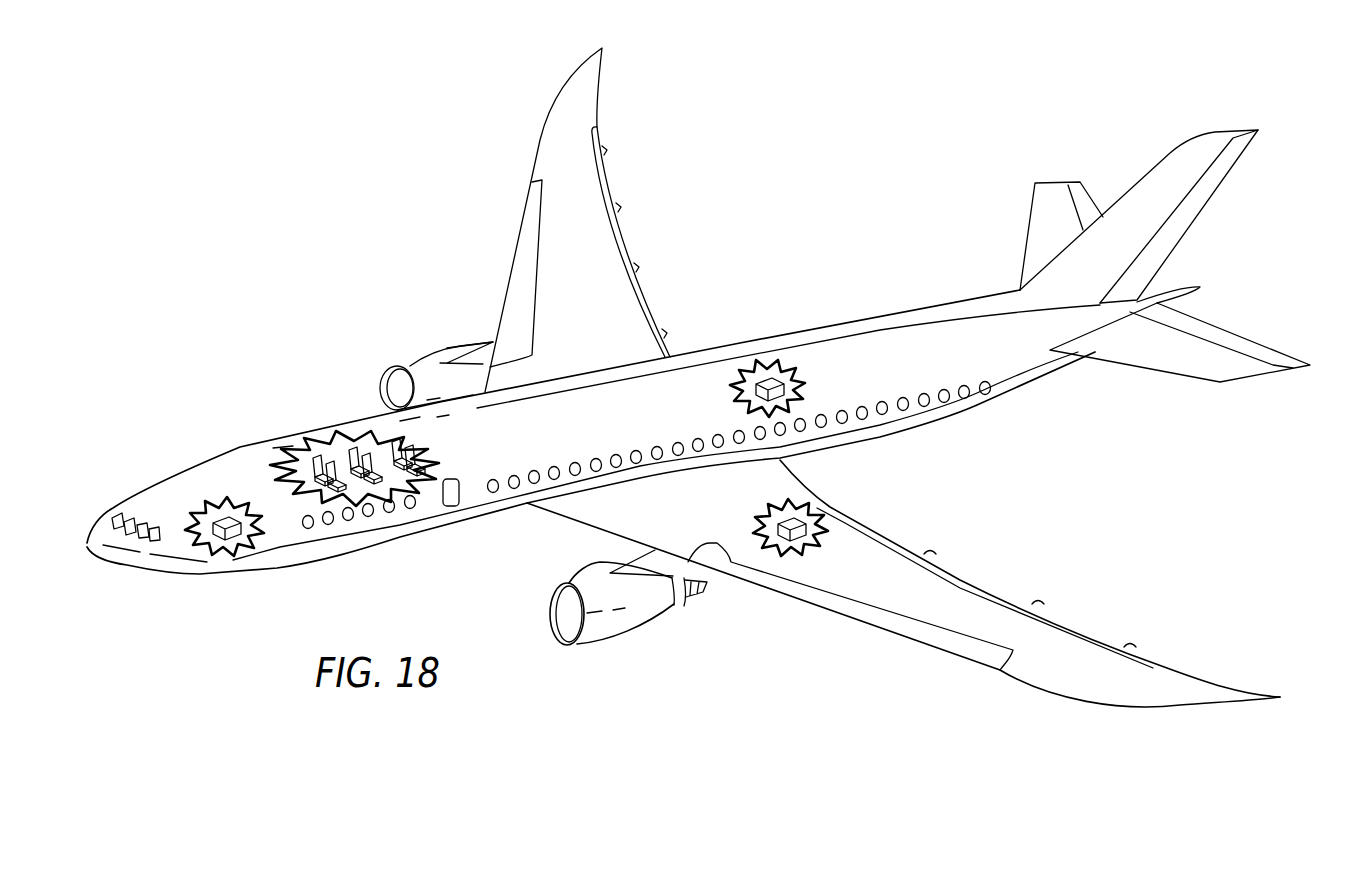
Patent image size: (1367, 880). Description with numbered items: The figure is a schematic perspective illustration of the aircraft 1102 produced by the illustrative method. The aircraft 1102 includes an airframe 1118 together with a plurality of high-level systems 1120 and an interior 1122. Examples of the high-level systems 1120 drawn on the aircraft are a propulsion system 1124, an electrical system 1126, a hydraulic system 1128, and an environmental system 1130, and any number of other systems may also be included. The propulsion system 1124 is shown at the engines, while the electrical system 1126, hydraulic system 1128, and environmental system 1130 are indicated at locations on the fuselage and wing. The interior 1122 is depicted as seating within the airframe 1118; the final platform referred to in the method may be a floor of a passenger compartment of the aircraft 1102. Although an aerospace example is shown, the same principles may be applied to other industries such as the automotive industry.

The aircraft 1102 is at (383, 235).
The airframe 1118 is at (348, 410).
The high-level systems 1120 is at (1172, 538).
The interior 1122 is at (347, 490).
The propulsion system 1124 is at (418, 358).
The electrical system 1126 is at (222, 515).
The hydraulic system 1128 is at (790, 522).
The environmental system 1130 is at (765, 378).